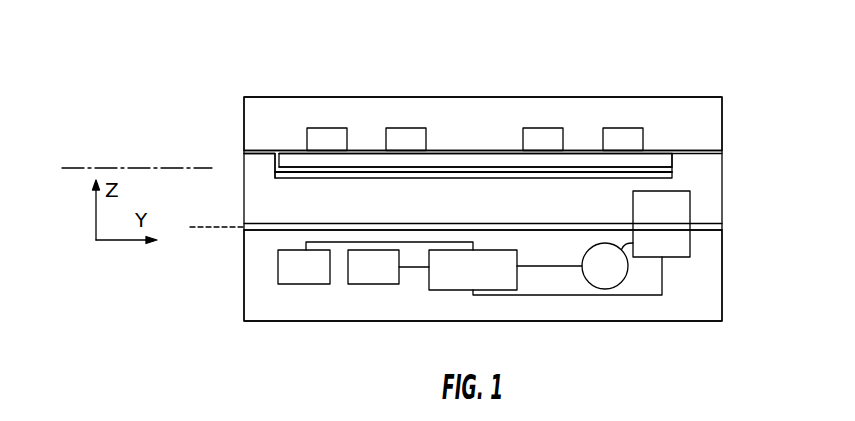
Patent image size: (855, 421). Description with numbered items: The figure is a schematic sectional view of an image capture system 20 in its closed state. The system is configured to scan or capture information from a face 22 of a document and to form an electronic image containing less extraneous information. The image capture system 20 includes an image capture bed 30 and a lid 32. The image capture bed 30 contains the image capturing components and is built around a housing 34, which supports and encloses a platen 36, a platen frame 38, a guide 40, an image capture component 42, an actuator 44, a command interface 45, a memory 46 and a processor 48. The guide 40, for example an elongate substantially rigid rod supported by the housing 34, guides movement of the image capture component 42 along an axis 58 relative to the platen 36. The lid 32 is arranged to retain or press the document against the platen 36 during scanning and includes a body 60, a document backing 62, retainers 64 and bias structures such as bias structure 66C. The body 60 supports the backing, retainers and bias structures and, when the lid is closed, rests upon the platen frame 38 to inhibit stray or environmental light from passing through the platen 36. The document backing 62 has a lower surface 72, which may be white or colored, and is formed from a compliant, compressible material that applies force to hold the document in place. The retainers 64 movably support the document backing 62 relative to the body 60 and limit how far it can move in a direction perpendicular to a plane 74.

The image capture system 20 is at (723, 88).
The face 22 is at (576, 173).
The image capture bed 30 is at (726, 198).
The lid 32 is at (727, 121).
The housing 34 is at (722, 279).
The platen 36 is at (295, 180).
The platen frame 38 is at (255, 169).
The guide 40 is at (264, 237).
The image capture component 42 is at (691, 241).
The actuator 44 is at (584, 250).
The command interface 45 is at (293, 285).
The memory 46 is at (393, 279).
The processor 48 is at (443, 287).
The axis 58 is at (195, 227).
The body 60 is at (243, 120).
The document backing 62 is at (455, 158).
The retainers 64 is at (418, 135).
The bias structure 66C is at (342, 135).
The lower surface 72 is at (437, 165).
The plane 74 is at (100, 168).